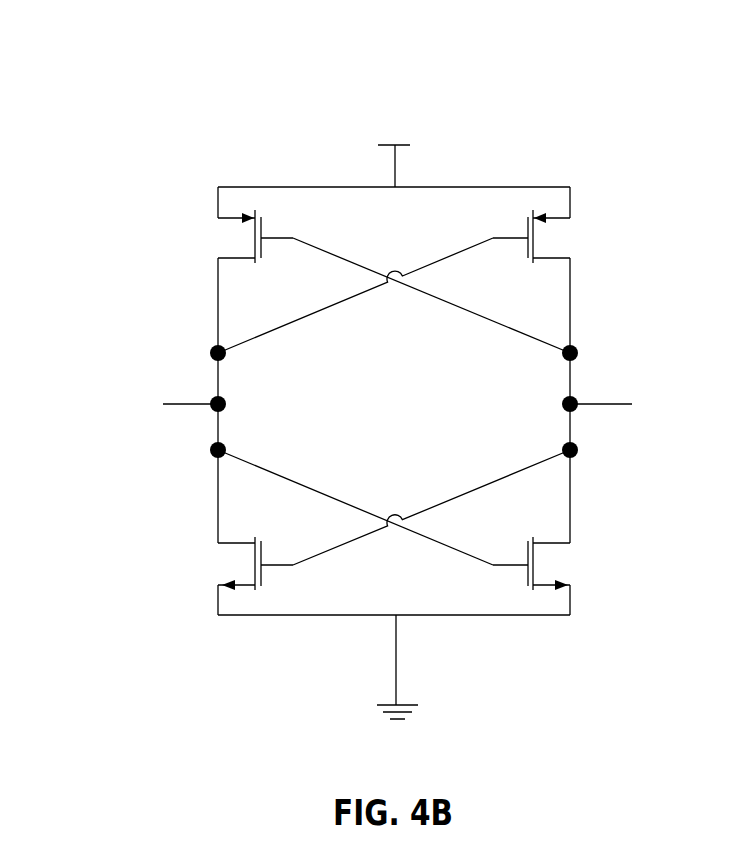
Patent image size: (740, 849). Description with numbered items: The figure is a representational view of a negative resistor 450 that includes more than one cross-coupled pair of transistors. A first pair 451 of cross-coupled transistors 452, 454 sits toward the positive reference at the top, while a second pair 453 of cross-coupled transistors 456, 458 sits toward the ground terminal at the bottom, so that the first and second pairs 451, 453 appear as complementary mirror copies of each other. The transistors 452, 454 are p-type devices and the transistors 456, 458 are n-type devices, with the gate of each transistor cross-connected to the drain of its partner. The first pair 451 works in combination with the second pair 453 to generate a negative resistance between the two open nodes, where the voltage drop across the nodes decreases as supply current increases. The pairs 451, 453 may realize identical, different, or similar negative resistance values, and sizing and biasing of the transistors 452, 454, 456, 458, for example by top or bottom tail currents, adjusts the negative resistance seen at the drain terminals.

The negative resistor 450 is at (92, 56).
The first pair of cross-coupled transistors 451 is at (218, 159).
The transistor 452 is at (199, 225).
The second pair of cross-coupled transistors 453 is at (218, 655).
The transistor 454 is at (597, 225).
The transistor 456 is at (199, 565).
The transistor 458 is at (597, 565).